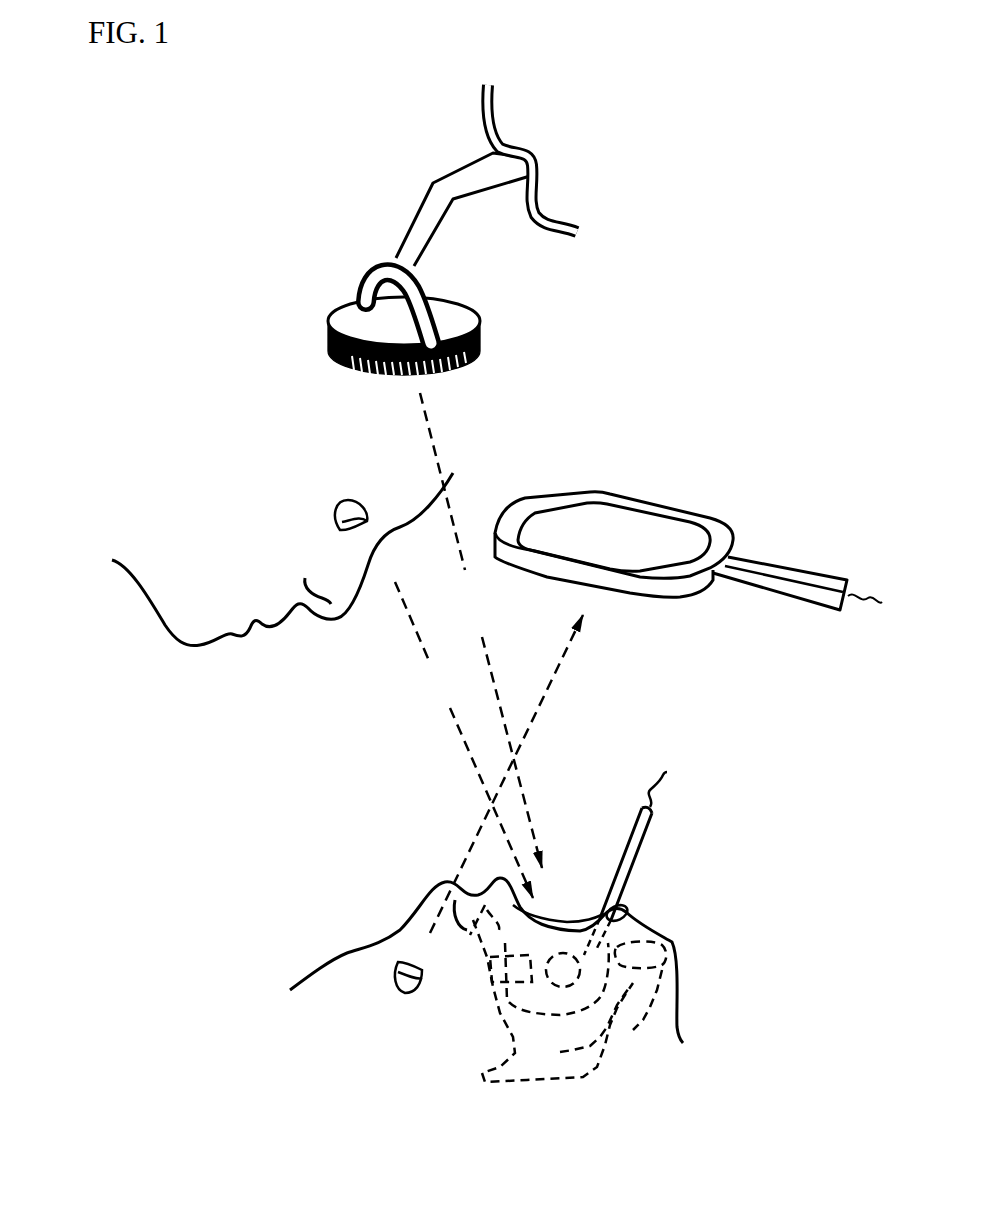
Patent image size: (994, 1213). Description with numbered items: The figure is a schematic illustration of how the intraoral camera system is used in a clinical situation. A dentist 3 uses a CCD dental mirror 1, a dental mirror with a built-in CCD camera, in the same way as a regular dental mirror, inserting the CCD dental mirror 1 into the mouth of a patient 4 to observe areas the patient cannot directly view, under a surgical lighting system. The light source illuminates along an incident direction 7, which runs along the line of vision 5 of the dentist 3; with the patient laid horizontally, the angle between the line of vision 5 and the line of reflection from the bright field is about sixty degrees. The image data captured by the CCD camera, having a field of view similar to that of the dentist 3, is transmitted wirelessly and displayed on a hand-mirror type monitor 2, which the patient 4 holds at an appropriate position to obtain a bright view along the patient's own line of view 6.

The CCD dental mirror 1 is at (643, 852).
The hand-mirror type monitor 2 is at (638, 540).
The dentist 3 is at (177, 652).
The patient 4 is at (296, 979).
The line of vision of the dentist 5 is at (327, 350).
The line of view of the patient 6 is at (506, 774).
The incident direction 7 is at (481, 629).